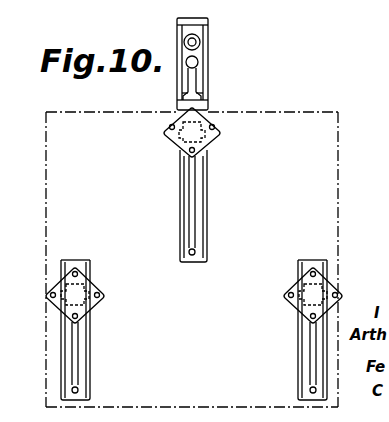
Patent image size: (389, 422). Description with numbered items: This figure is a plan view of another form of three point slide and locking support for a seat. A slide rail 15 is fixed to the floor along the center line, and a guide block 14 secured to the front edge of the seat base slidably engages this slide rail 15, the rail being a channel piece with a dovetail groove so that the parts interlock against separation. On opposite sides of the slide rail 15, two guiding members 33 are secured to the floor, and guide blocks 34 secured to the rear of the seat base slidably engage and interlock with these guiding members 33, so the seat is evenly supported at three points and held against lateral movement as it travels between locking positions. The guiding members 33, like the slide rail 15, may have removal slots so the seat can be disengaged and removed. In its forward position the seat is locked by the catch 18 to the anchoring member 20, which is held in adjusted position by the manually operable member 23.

The guide block 14 is at (177, 133).
The slide rail 15 is at (264, 202).
The catch 18 is at (197, 67).
The anchoring member 20 is at (183, 32).
The manually operable member 23 is at (264, 47).
The guiding member 33 is at (146, 362).
The guide block 34 is at (148, 299).